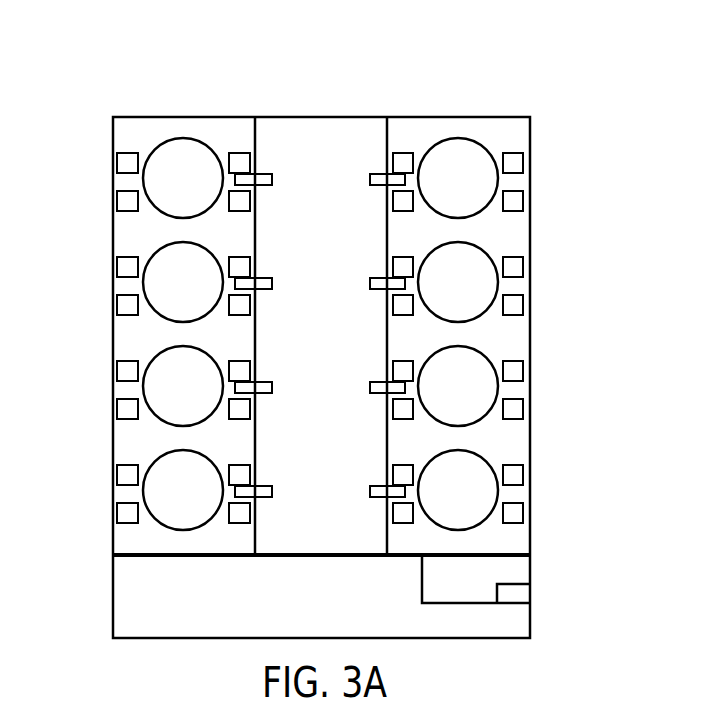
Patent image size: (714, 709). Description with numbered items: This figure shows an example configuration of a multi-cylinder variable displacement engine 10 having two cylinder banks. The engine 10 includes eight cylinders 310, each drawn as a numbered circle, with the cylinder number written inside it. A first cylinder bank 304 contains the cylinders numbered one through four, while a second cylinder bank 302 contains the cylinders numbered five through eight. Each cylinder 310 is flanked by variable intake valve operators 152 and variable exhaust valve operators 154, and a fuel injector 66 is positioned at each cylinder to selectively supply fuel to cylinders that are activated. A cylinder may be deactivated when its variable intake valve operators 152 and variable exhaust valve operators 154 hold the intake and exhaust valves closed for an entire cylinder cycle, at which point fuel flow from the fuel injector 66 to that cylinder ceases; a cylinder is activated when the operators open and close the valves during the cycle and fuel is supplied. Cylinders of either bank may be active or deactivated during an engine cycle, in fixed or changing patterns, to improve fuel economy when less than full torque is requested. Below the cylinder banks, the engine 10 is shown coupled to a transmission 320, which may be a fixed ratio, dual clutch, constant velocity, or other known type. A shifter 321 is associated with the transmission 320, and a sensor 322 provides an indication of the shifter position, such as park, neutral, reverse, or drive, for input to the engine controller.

The engine 10 is at (390, 48).
The second cylinder bank 302 is at (165, 75).
The first cylinder bank 304 is at (485, 82).
The cylinder 310 is at (143, 182).
The variable intake valve operator 152 is at (242, 162).
The variable exhaust valve operator 154 is at (128, 165).
The fuel injector 66 is at (258, 180).
The transmission 320 is at (321, 581).
The shifter 321 is at (476, 579).
The sensor 322 is at (518, 598).